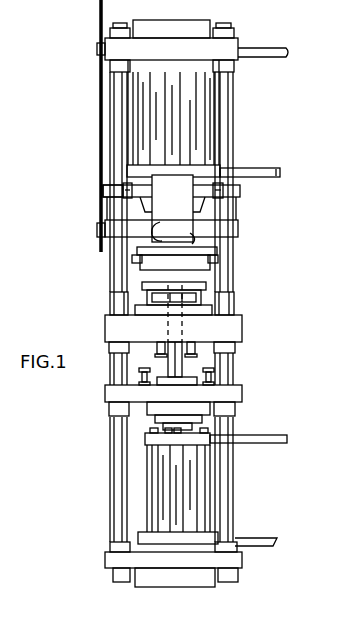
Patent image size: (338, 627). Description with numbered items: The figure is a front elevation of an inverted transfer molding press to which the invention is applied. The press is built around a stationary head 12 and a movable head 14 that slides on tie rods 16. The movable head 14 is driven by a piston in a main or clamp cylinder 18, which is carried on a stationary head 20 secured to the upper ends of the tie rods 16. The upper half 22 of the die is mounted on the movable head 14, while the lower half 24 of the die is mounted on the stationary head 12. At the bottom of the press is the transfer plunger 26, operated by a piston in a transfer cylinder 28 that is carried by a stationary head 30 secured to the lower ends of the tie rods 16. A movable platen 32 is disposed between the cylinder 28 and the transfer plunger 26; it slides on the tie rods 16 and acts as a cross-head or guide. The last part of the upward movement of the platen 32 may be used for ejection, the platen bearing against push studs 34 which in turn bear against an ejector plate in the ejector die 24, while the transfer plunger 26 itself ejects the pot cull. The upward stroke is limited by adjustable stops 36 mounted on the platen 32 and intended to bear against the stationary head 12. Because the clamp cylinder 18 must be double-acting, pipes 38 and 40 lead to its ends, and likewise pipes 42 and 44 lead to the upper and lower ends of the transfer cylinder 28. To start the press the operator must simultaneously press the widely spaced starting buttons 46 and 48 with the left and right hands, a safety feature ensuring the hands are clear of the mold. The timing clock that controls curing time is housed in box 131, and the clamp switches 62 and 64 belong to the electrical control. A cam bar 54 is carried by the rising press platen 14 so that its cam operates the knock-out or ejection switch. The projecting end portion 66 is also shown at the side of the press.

The stationary head 12 is at (242, 333).
The movable head 14 is at (238, 226).
The tie rods 16 is at (117, 262).
The clamp cylinder 18 is at (190, 123).
The stationary head 20 is at (238, 45).
The upper half of the die 22 is at (200, 268).
The lower half of the die 24 is at (208, 283).
The transfer plunger 26 is at (185, 364).
The transfer cylinder 28 is at (200, 478).
The stationary head 30 is at (107, 562).
The movable platen 32 is at (242, 392).
The push studs 34 is at (157, 351).
The adjustable stops 36 is at (140, 373).
The pipe 38 is at (289, 51).
The pipe 40 is at (262, 169).
The pipe 42 is at (275, 437).
The pipe 44 is at (276, 536).
The starting button 46 is at (103, 195).
The starting button 48 is at (240, 191).
The cam bar 54 is at (99, 133).
The clamp switch 62 is at (163, 228).
The clamp switch 64 is at (184, 236).
The end portion 66 is at (280, 172).
The box 131 is at (172, 208).